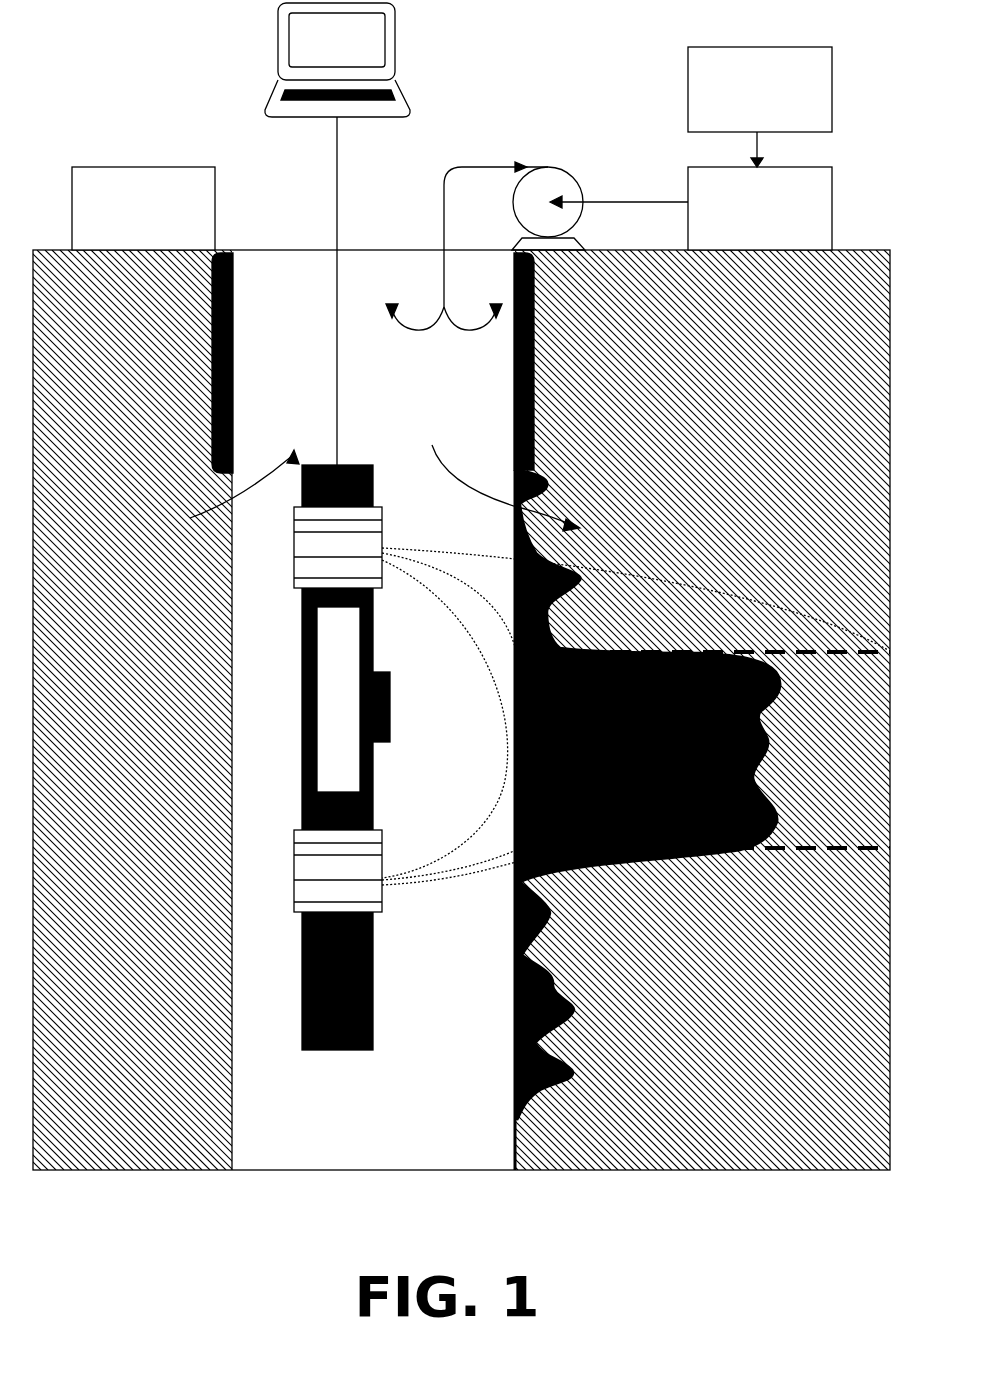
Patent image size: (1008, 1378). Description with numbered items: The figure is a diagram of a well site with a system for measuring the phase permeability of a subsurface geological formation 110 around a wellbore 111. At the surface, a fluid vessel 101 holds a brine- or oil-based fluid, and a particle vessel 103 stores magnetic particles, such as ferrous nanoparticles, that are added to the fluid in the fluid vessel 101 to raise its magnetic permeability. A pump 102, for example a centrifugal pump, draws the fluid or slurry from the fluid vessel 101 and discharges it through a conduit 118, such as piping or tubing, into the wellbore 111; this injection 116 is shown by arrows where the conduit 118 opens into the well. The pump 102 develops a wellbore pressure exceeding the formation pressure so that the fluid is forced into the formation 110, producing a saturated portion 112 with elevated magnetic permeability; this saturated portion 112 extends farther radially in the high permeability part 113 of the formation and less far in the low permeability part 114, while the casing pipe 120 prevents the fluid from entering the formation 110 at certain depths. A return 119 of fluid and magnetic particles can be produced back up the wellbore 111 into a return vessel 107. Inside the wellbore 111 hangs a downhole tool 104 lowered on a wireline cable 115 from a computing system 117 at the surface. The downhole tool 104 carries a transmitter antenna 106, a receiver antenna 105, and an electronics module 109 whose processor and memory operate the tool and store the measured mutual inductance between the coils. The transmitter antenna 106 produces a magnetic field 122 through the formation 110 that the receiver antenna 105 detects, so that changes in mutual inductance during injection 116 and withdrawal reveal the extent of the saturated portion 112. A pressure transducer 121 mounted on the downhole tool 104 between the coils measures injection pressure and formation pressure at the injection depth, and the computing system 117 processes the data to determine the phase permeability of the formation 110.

The fluid vessel 101 is at (760, 191).
The pump 102 is at (565, 172).
The particle vessel 103 is at (760, 89).
The downhole tool 104 is at (506, 757).
The receiver antenna 105 is at (405, 871).
The transmitter antenna 106 is at (591, 692).
The return vessel 107 is at (143, 208).
The electronics module 109 is at (340, 737).
The geological formation 110 is at (504, 710).
The wellbore 111 is at (373, 820).
The saturated portion 112 is at (648, 795).
The high permeability part 113 is at (703, 750).
The low permeability part 114 is at (839, 941).
The wireline cable 115 is at (303, 291).
The injection 116 is at (483, 417).
The computing system 117 is at (337, 60).
The conduit 118 is at (463, 234).
The return 119 is at (252, 459).
The casing pipe 120 is at (534, 368).
The pressure transducer 121 is at (390, 710).
The magnetic field 122 is at (735, 648).